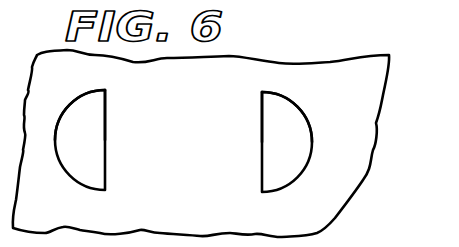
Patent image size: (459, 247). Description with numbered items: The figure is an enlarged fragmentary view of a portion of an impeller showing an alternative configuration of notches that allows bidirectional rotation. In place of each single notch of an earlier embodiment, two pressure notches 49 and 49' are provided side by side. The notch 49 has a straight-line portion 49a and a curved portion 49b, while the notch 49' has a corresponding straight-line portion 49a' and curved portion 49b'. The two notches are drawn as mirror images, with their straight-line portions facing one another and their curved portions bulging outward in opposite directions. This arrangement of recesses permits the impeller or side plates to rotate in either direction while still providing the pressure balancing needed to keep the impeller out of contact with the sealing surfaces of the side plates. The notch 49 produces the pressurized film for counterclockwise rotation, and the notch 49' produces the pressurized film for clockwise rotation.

The pressure notch 49 is at (102, 140).
The straight-line portion 49a is at (139, 108).
The curved portion 49b is at (74, 101).
The pressure notch 49' is at (303, 146).
The straight-line portion 49a' is at (232, 152).
The curved portion 49b' is at (315, 106).